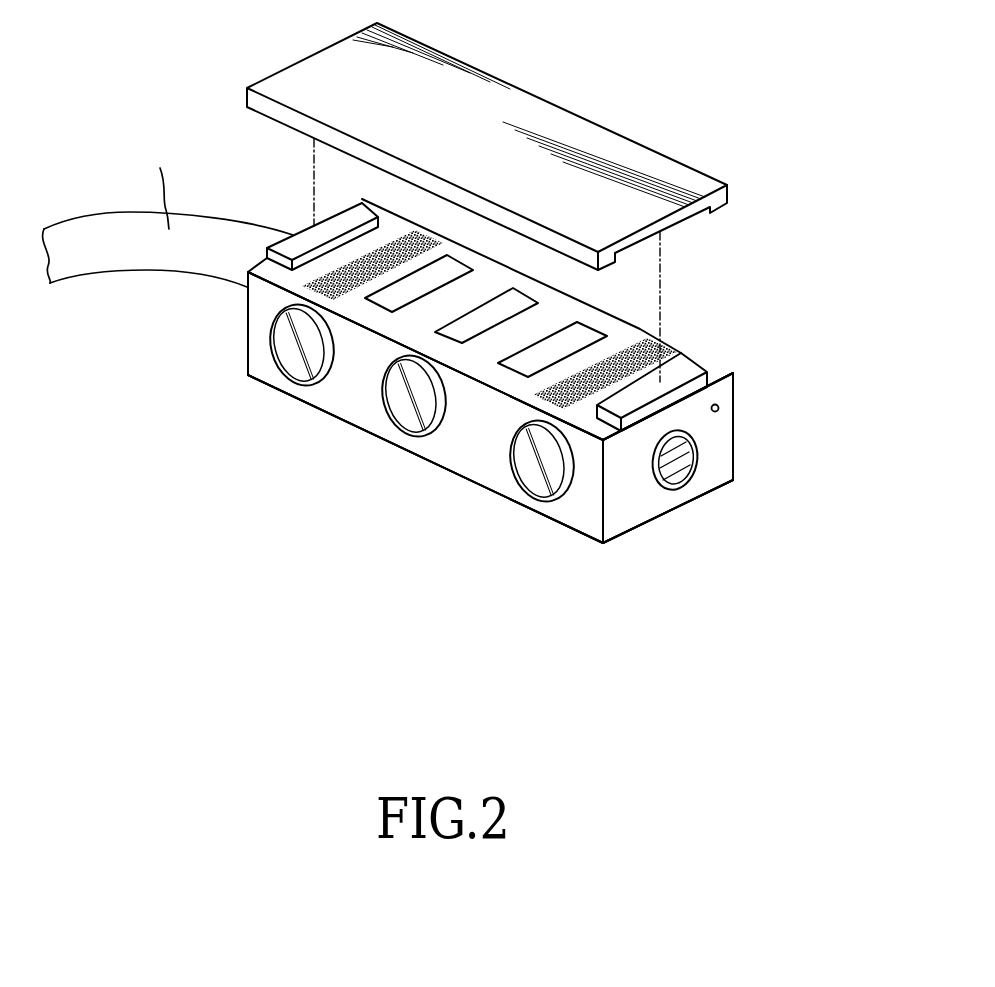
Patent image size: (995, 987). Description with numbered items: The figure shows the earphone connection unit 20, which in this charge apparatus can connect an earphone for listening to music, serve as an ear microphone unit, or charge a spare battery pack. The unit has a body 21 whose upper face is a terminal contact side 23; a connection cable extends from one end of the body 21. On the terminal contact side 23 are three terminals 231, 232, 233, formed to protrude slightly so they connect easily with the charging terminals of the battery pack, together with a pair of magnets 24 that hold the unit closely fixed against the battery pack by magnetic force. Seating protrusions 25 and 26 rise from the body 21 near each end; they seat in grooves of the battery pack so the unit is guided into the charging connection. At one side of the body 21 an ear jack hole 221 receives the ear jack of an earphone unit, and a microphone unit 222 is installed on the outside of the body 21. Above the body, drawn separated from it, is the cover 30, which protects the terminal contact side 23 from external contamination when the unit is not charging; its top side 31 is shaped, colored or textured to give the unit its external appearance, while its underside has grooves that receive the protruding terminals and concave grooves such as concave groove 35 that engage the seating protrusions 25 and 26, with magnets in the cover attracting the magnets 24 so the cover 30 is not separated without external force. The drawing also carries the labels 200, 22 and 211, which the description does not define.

The earphone connection unit 20 is at (798, 185).
The connector block 200 is at (327, 398).
The body 21 is at (473, 460).
The end portion of block 22 is at (640, 498).
The terminal contact side 23 is at (368, 311).
The bore of coupling hole 211 is at (413, 404).
The magnets 24 is at (300, 288).
The seating protrusion 25 is at (683, 370).
The seating protrusion 26 is at (293, 235).
The terminal 231 is at (588, 332).
The terminal 232 is at (476, 321).
The terminal 233 is at (399, 294).
The ear jack hole 221 is at (680, 455).
The microphone unit 222 is at (722, 408).
The cover 30 is at (603, 137).
The top side 31 is at (512, 107).
The concave groove 35 is at (678, 218).